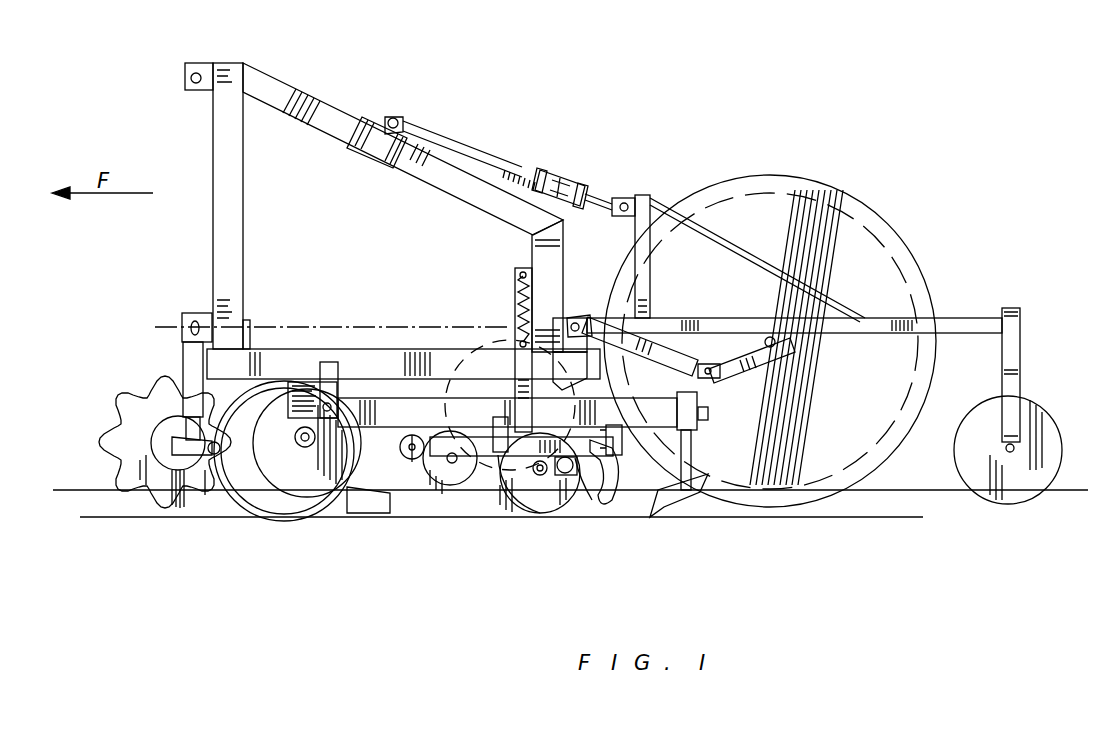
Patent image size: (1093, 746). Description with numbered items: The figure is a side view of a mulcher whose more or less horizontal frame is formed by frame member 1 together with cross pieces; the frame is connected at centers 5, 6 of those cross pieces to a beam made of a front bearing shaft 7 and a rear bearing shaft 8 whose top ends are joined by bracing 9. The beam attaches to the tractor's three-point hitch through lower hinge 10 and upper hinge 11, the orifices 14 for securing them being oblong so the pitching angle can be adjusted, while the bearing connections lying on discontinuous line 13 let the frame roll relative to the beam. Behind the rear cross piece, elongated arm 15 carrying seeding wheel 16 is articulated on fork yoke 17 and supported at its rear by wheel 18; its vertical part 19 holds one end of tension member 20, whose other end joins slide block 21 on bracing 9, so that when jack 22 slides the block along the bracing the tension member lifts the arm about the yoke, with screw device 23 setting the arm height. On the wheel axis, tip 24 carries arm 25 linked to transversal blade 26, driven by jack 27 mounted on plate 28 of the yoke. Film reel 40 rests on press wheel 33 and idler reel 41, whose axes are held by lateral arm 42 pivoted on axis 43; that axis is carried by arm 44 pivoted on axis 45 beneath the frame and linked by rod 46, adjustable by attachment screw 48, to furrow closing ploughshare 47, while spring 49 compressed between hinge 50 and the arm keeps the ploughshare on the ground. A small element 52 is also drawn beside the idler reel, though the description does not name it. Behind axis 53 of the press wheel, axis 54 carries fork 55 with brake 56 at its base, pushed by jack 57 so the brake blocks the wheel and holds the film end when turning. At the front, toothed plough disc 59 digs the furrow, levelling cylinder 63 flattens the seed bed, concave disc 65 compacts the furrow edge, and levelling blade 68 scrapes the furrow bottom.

The frame member 1 is at (388, 357).
The center of cross piece 5 is at (252, 330).
The center of cross piece 6 is at (545, 340).
The front bearing shaft 7 is at (243, 252).
The rear bearing shaft 8 is at (563, 258).
The bracing 9 is at (283, 100).
The lower hinge 10 is at (182, 318).
The upper hinge 11 is at (185, 70).
The discontinuous line 13 is at (305, 326).
The orifice 14 is at (196, 320).
The elongated arm 15 is at (860, 336).
The seeding wheel 16 is at (803, 190).
The fork yoke 17 is at (575, 318).
The wheel 18 is at (1045, 437).
The vertical part 19 is at (635, 236).
The tension member 20 is at (513, 168).
The slide block 21 is at (373, 132).
The jack 22 is at (507, 177).
The screw device 23 is at (570, 176).
The tip 24 is at (765, 343).
The arm 25 is at (763, 367).
The transversal blade 26 is at (620, 437).
The jack 27 is at (642, 353).
The plate 28 is at (568, 360).
The press wheel 33 is at (517, 497).
The film reel 40 is at (503, 369).
The idler reel 41 is at (442, 473).
The lateral arm 42 is at (520, 450).
The axis 43 is at (508, 427).
The arm 44 is at (410, 403).
The axis 45 is at (323, 407).
The rod 46 is at (693, 457).
The furrow closing ploughshare 47 is at (672, 496).
The attachment screw 48 is at (710, 412).
The spring 49 is at (515, 300).
The hinge 50 is at (517, 268).
The wheel 52 is at (413, 457).
The axis 53 is at (537, 480).
The axis 54 is at (560, 476).
The fork 55 is at (598, 490).
The brake 56 is at (617, 479).
The jack 57 is at (590, 437).
The plough disc 59 is at (115, 450).
The levelling cylinder 63 is at (288, 470).
The concave disc 65 is at (250, 475).
The levelling blade 68 is at (372, 500).